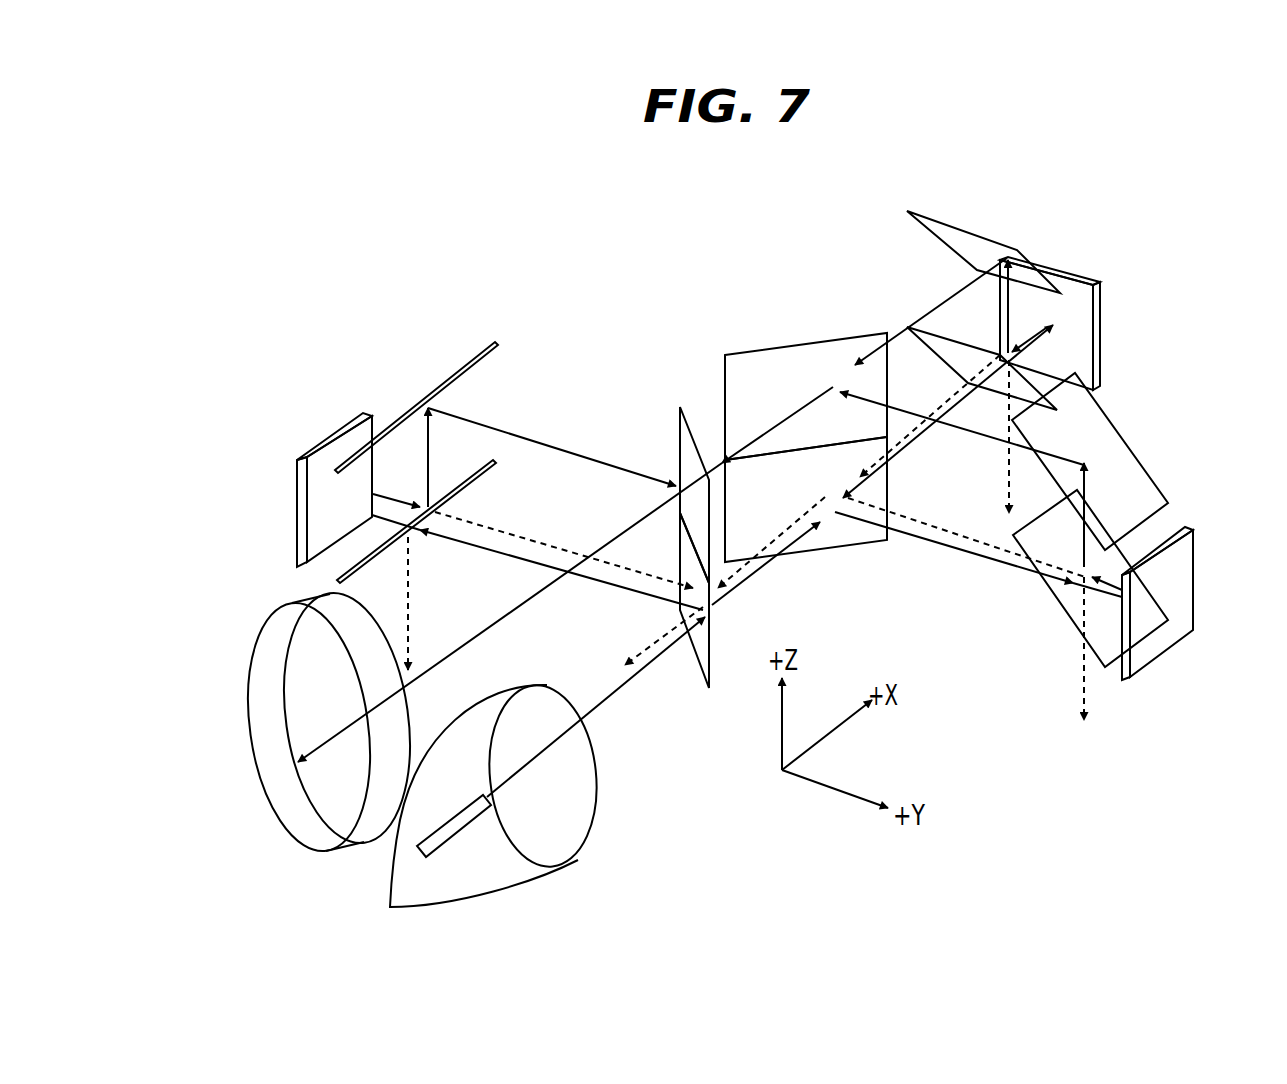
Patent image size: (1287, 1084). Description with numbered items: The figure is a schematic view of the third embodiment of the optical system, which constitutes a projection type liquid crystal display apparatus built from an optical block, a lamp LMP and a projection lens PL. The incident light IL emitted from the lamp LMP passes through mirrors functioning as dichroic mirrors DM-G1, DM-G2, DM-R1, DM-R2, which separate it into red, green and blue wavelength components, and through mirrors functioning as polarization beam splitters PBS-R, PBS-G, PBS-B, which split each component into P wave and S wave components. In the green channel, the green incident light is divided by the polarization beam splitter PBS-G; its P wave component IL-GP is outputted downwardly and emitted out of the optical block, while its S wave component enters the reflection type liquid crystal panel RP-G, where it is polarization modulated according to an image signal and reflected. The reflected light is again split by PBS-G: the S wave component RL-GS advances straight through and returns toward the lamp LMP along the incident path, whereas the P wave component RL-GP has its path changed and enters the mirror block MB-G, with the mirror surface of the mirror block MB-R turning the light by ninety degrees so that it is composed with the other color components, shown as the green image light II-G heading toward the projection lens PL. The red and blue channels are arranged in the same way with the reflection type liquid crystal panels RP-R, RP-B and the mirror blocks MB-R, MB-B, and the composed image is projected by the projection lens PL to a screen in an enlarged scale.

The projection lens PL is at (298, 850).
The lamp LMP is at (533, 875).
The incident light IL is at (600, 713).
The P wave component of the G incident light IL-GP is at (410, 610).
The green image light II-G is at (610, 585).
The P wave component of the G reflected light RL-GP is at (613, 463).
The S wave component of the G reflected light RL-GS is at (632, 635).
The reflection type liquid crystal panel for G RP-G is at (325, 442).
The mirror block for G MB-G is at (493, 343).
The polarization beam splitter for G PBS-G is at (478, 463).
The dichroic mirror DM-G1 is at (685, 550).
The dichroic mirror DM-G2 is at (680, 413).
The dichroic mirror DM-R1 is at (825, 550).
The dichroic mirror DM-R2 is at (777, 348).
The mirror block for B MB-B is at (1017, 252).
The reflection type liquid crystal panel for B RP-B is at (1100, 313).
The polarization beam splitter for B PBS-B is at (995, 390).
The mirror block for R MB-R is at (1140, 458).
The polarization beam splitter for R PBS-R is at (1057, 597).
The reflection type liquid crystal panel for R RP-R is at (1170, 643).